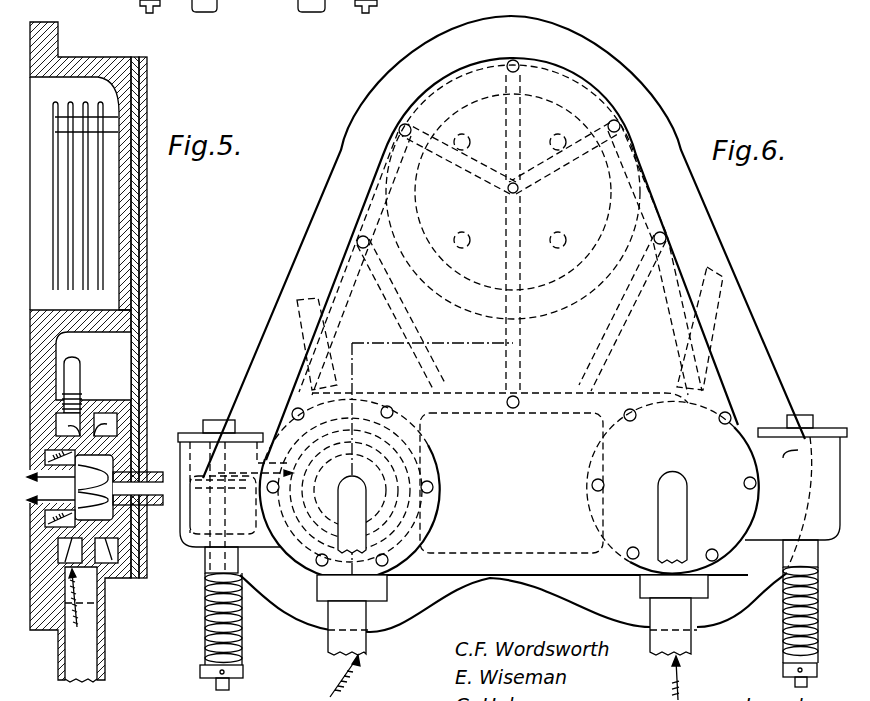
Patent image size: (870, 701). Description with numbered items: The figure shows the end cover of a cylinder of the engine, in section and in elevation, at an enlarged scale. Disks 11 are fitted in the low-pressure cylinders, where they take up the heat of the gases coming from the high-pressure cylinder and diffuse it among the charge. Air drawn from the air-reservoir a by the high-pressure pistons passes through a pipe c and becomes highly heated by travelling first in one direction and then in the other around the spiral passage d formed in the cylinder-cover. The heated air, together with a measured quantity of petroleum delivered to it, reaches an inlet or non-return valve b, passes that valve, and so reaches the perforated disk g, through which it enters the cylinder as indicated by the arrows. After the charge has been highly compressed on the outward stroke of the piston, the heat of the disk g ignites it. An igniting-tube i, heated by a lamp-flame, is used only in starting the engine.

In FIG. 5, the disks 11 is at (85, 196).
In FIG. 6, the disks 11 is at (513, 192).
In FIG. 5, the air-reservoir a is at (113, 504).
In FIG. 6, the inlet or non-return valve b is at (210, 483).
In FIG. 5, the pipe c is at (81, 625).
In FIG. 6, the pipe c is at (512, 637).
In FIG. 5, the spiral passage d is at (133, 408).
In FIG. 5, the perforated disk g is at (86, 397).
In FIG. 6, the igniting-tube i is at (519, 518).